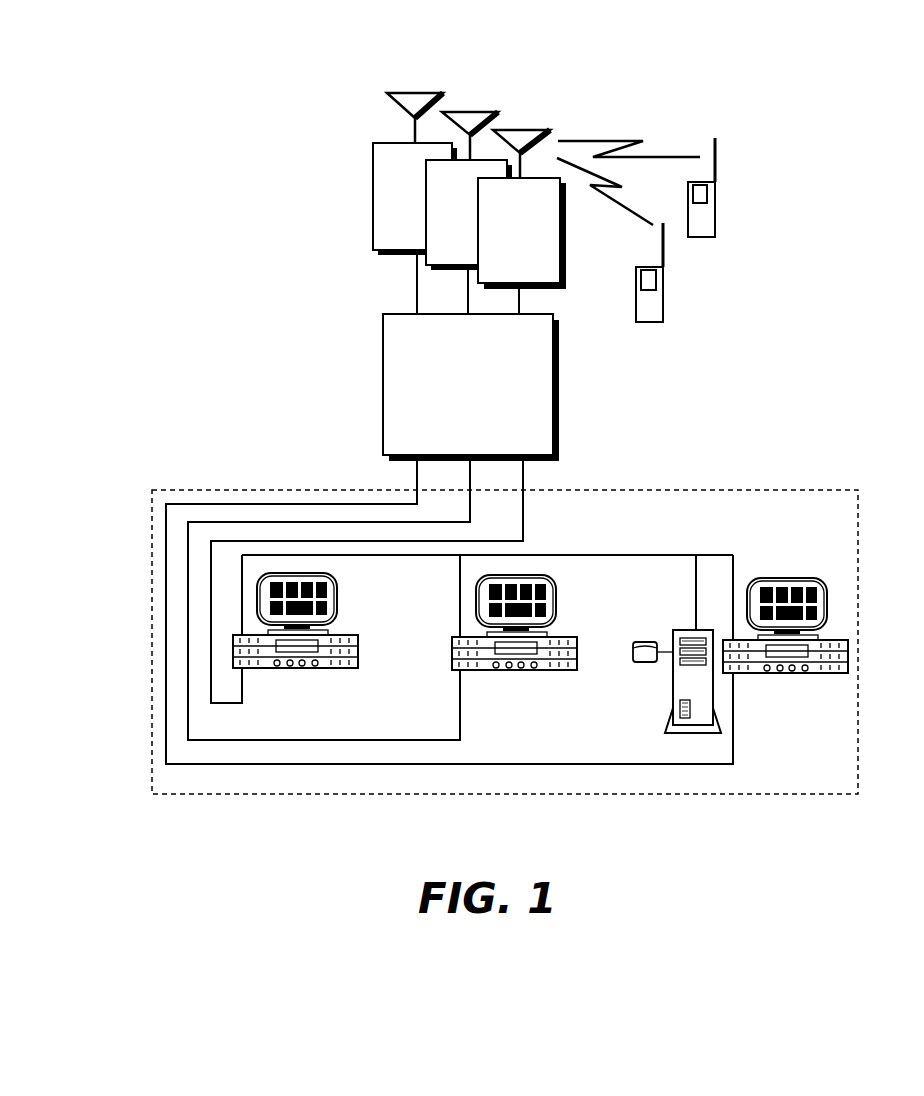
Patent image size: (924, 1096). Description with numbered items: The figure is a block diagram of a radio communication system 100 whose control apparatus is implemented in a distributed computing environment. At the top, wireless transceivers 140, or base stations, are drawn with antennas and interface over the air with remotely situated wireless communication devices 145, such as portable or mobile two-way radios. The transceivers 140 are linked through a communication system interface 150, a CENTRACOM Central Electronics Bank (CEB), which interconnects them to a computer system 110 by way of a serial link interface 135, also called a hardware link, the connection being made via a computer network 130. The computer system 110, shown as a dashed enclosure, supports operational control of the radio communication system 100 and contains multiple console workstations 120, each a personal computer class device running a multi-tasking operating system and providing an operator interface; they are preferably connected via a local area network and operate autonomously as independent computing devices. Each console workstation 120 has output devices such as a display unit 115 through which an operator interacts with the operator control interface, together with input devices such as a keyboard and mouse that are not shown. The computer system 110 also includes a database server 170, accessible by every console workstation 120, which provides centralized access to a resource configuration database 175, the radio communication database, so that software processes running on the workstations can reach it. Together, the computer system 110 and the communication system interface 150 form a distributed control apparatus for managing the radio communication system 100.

The radio communication system 100 is at (190, 849).
The computer system 110 is at (830, 487).
The display unit 115 is at (477, 608).
The console workstations 120 is at (322, 672).
The computer network 130 is at (688, 555).
The serial link interface 135 is at (367, 541).
The wireless transceivers 140 is at (478, 232).
The wireless communication devices 145 is at (720, 202).
The communication system interface 150 is at (378, 372).
The database server 170 is at (672, 692).
The resource configuration database 175 is at (633, 665).